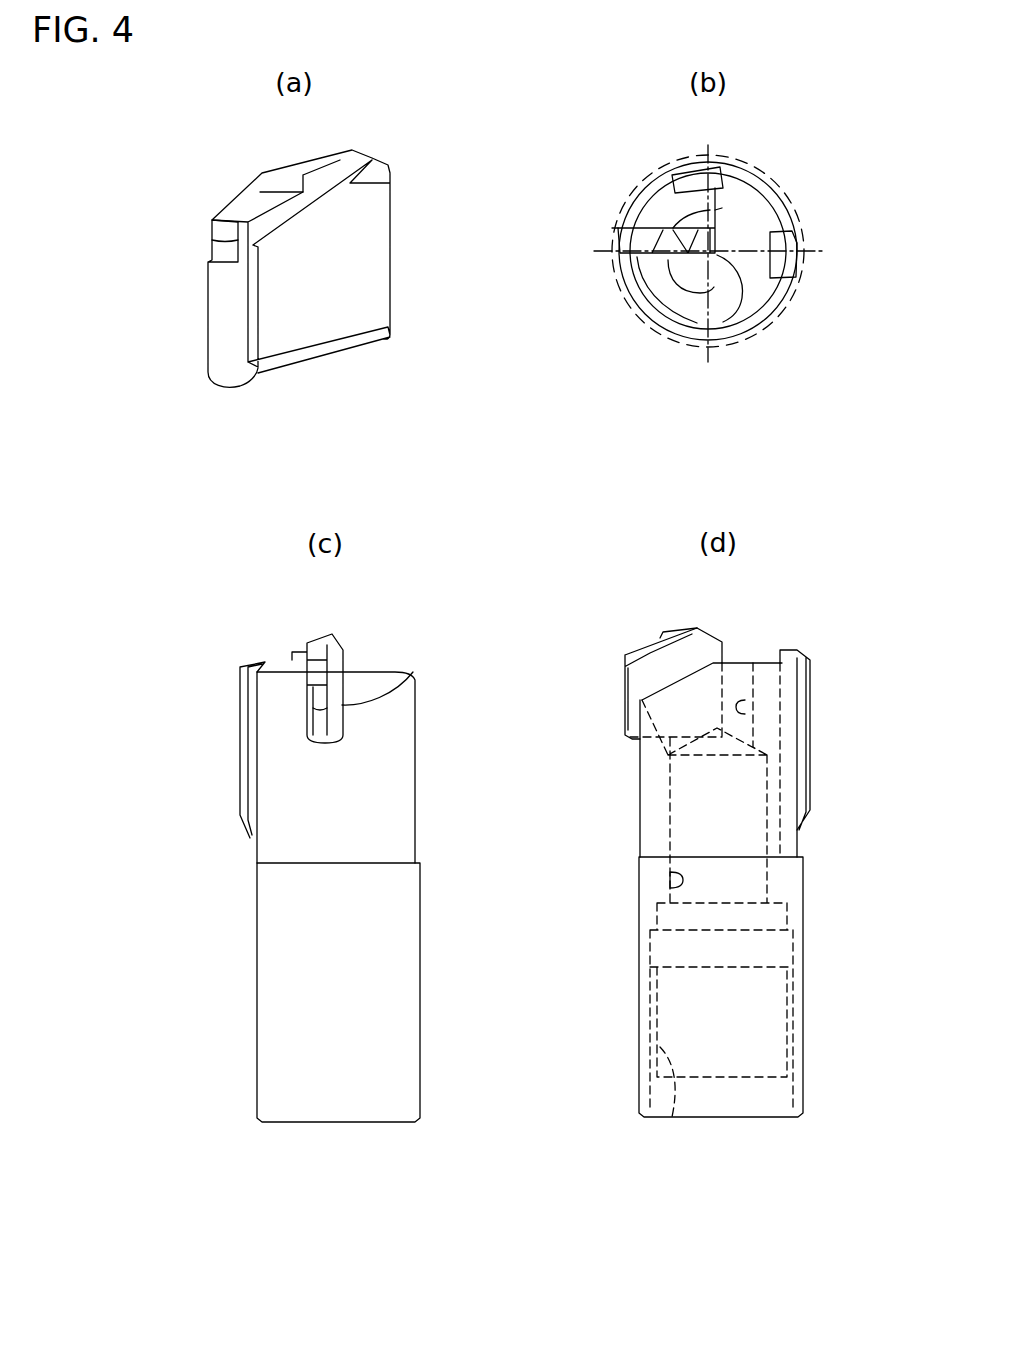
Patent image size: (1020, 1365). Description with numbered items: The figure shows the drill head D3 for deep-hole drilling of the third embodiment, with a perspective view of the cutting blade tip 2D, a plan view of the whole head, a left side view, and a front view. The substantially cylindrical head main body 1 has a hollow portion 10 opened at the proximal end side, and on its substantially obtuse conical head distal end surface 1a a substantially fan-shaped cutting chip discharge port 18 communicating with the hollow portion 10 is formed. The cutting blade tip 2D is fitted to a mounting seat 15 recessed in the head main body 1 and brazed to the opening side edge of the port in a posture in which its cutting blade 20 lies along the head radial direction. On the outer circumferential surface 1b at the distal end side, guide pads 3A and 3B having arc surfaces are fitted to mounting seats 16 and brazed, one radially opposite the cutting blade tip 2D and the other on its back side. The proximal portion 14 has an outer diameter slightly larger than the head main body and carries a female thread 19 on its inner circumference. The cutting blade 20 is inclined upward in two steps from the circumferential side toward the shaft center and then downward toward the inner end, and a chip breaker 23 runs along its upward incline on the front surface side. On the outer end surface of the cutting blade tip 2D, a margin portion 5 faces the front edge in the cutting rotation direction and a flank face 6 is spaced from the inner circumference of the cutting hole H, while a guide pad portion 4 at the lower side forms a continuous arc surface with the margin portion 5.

The head main body 1 is at (417, 797).
The head distal end surface 1a is at (745, 228).
The outer circumferential surface 1b is at (743, 180).
The cutting blade tip 2D is at (397, 290).
The guide pad 3A is at (800, 260).
The guide pad 3B is at (692, 173).
The guide pad portion 4 is at (228, 300).
The margin portion 5 is at (210, 222).
The flank face 6 is at (218, 247).
The hollow portion 10 is at (700, 270).
The proximal portion 14 is at (252, 1005).
The mounting seat 15 is at (320, 710).
The mounting seats 16 is at (773, 268).
The cutting chip discharge port 18 is at (652, 300).
The female thread 19 is at (672, 1117).
The cutting blade 20 is at (312, 165).
The chip breaker 23 is at (320, 202).
The drill head D3 is at (778, 188).
The cutting hole H is at (747, 333).